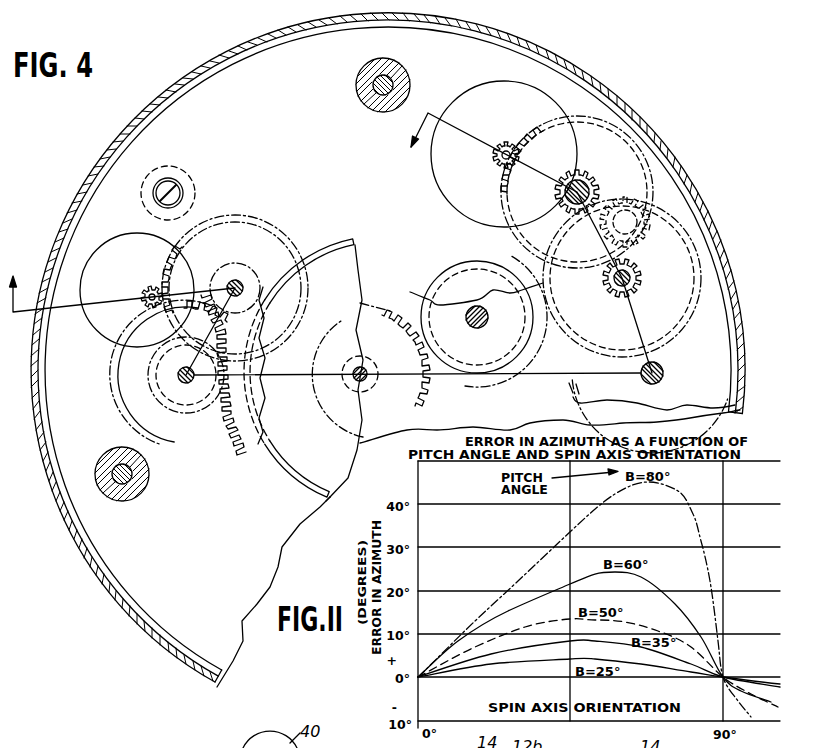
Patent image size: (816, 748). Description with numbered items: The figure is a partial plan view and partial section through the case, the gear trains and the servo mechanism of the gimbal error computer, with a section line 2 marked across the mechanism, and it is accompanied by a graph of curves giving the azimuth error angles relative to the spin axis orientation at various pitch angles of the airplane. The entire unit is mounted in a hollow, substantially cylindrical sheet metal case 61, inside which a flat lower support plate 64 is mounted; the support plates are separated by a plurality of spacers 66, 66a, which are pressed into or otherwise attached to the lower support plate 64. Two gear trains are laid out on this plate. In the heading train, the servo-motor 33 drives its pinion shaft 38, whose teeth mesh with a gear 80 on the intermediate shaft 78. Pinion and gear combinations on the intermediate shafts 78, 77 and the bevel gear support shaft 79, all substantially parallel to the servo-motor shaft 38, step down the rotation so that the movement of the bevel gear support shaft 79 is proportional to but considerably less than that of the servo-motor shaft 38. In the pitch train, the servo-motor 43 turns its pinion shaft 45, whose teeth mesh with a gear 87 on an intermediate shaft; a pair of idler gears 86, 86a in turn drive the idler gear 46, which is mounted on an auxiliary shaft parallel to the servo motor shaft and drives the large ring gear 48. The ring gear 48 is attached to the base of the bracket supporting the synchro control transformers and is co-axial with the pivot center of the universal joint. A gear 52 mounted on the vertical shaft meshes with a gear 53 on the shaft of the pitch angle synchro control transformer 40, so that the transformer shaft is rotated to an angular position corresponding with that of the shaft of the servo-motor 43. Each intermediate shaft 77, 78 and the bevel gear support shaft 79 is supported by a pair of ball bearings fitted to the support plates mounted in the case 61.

The section line 2- 2 is at (328, 235).
The servo-motor 33 is at (478, 91).
The servo-motor shaft 38 is at (494, 155).
The control transformer 40 is at (452, 275).
The servo-motor 43 is at (118, 235).
The servo-motor shaft 45 is at (137, 296).
The idler gear 46 is at (173, 410).
The ring gear 48 is at (282, 487).
The gear 52 is at (416, 403).
The gear 53 is at (406, 306).
The case 61 is at (79, 556).
The lower support plate 64 is at (175, 633).
The spacer 66 is at (124, 500).
The spacer 66a is at (375, 112).
The intermediate shaft 77 is at (641, 276).
The intermediate shaft 78 is at (583, 183).
The bevel gear support shaft 79 is at (664, 376).
The gear 80 is at (520, 236).
The idler gear 86 is at (262, 268).
The idler gear 86a is at (114, 388).
The gear 87 is at (246, 222).